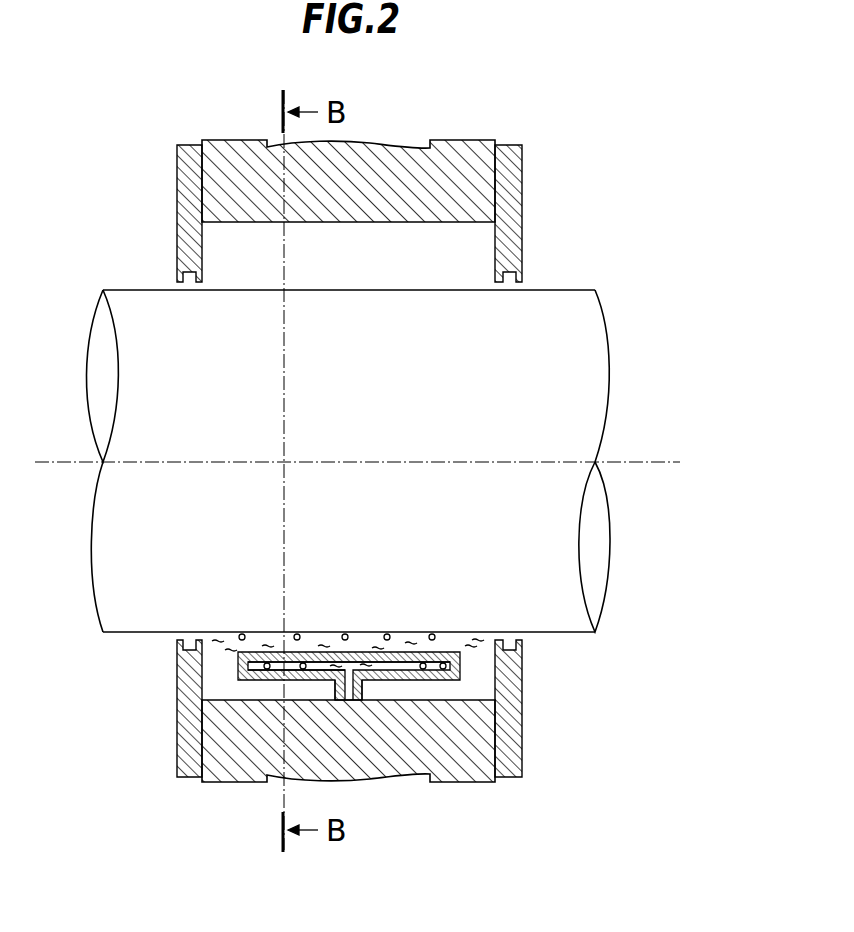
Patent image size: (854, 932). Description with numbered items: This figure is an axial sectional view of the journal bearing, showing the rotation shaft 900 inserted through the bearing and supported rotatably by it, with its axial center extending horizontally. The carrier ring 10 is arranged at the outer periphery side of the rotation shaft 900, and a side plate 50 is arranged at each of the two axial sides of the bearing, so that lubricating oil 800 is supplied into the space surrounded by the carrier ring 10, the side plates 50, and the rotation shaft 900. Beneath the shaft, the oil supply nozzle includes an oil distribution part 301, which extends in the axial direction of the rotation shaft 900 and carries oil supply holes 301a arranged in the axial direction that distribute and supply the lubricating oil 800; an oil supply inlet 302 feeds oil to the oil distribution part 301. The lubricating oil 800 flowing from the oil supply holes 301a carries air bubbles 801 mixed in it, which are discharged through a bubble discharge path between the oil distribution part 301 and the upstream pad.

The carrier ring 10 is at (462, 142).
The side plate 50 is at (177, 186).
The rotation shaft 900 is at (555, 347).
The lubricating oil 800 is at (268, 640).
The air bubbles 801 is at (242, 634).
The oil distribution part 301 is at (397, 652).
The oil supply hole 301a is at (313, 650).
The oil supply inlet 302 is at (360, 693).